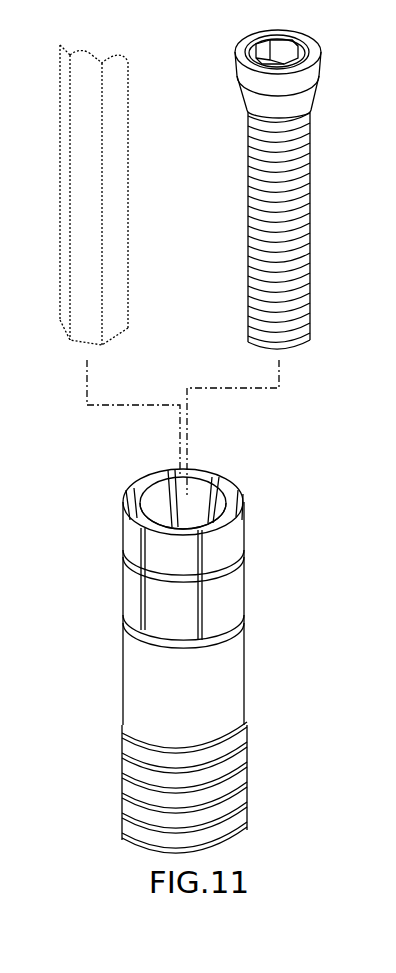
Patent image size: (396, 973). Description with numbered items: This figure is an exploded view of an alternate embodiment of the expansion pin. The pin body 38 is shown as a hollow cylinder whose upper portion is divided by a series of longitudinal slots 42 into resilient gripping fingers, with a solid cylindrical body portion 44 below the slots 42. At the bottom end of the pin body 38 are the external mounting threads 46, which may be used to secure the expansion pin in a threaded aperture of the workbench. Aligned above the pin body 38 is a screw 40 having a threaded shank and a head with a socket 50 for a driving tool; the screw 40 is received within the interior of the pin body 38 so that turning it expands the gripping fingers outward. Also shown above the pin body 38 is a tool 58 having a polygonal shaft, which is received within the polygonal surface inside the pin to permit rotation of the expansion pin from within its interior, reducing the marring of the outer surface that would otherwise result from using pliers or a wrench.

The pin body 38 is at (176, 637).
The screw 40 is at (256, 181).
The slots 42 is at (167, 470).
The cylindrical body portion 44 is at (178, 650).
The external mounting threads 46 is at (125, 760).
The screw head socket 50 is at (250, 45).
The tool 58 is at (122, 157).